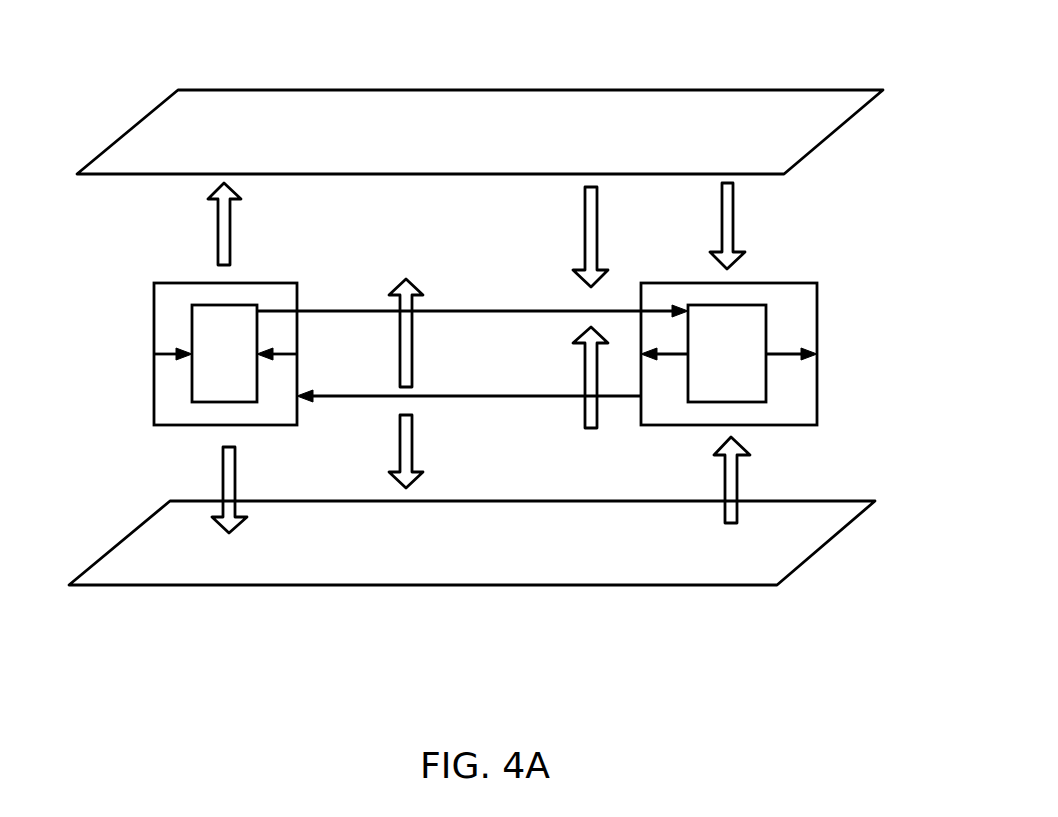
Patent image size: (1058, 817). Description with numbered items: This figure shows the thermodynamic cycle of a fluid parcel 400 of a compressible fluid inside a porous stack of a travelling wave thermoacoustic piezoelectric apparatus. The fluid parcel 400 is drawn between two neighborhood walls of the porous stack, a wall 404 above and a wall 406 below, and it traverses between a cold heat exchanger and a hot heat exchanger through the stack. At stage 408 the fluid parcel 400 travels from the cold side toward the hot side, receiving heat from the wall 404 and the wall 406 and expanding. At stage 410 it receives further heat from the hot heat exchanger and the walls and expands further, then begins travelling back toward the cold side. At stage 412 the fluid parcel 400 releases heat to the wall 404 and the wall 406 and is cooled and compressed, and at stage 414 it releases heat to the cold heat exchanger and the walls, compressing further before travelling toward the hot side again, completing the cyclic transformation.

The fluid parcel 400 is at (303, 280).
The wall 404 is at (850, 95).
The wall 406 is at (777, 573).
The stage 408 is at (463, 310).
The stage 410 is at (735, 233).
The stage 412 is at (415, 280).
The stage 414 is at (218, 233).